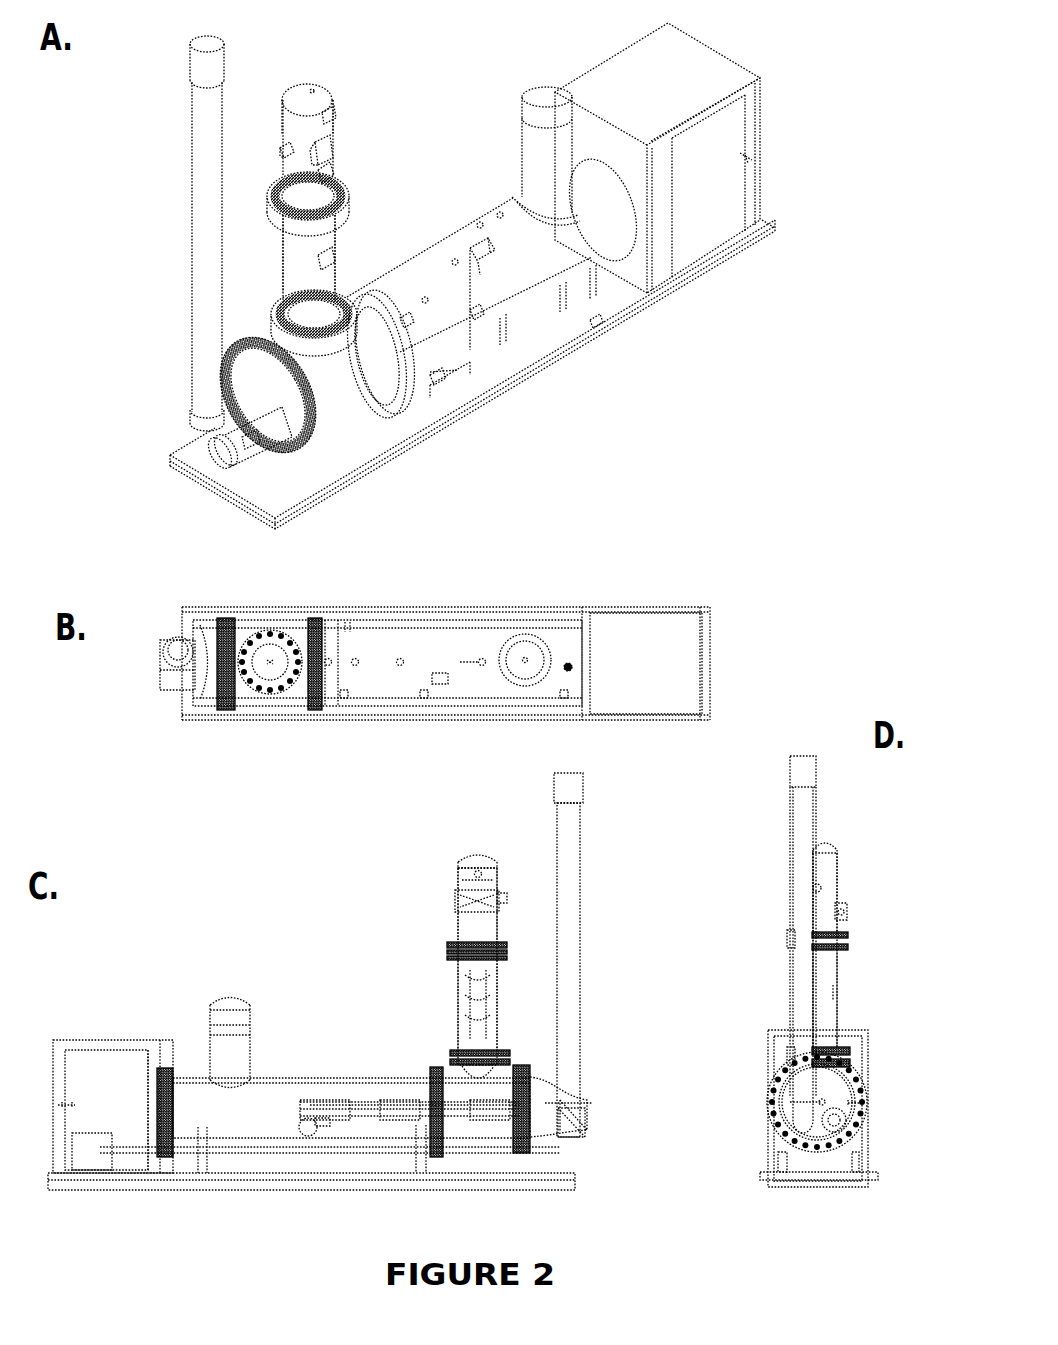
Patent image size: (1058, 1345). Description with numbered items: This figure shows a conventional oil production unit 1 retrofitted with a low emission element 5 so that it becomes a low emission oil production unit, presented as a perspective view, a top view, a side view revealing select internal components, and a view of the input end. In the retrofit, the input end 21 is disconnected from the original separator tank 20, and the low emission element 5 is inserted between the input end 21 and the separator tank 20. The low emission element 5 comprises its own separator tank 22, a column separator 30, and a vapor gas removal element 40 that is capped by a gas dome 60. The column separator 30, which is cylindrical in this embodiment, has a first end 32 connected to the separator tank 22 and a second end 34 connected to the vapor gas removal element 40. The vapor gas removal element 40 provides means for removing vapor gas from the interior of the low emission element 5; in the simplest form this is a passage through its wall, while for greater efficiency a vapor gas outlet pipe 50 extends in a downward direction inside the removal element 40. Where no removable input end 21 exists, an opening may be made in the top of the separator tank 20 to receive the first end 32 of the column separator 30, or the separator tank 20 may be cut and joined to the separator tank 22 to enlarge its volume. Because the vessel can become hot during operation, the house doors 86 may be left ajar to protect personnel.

The oil production unit 1 is at (800, 280).
The low emission element 5 is at (335, 40).
The separator tank 20 is at (505, 272).
The input end 21 is at (252, 380).
The separator tank 22 is at (323, 403).
The column separator 30 is at (335, 250).
The first end 32 is at (292, 318).
The second end 34 is at (268, 198).
The vapor gas removal element 40 is at (318, 150).
The vapor gas outlet pipe 50 is at (280, 148).
The gas dome 60 is at (305, 95).
The house doors 86 is at (717, 197).